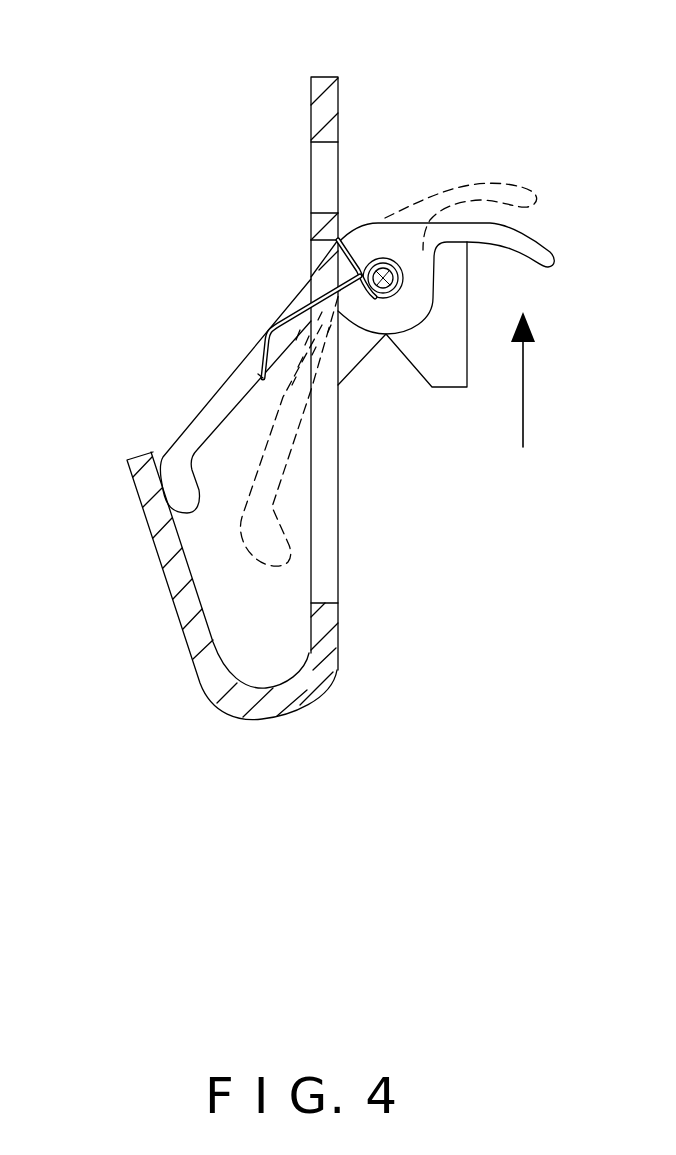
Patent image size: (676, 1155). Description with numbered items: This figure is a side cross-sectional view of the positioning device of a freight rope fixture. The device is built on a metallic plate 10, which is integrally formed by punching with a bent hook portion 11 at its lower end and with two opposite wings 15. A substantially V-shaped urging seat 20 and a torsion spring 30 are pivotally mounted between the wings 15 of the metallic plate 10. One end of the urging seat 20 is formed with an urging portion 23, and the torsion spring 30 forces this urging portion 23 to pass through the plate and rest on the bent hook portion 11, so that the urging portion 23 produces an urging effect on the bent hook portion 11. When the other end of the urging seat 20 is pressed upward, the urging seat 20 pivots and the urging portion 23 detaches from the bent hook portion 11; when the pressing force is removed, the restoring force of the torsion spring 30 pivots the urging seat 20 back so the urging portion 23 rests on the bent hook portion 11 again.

The metallic plate 10 is at (394, 85).
The bent hook portion 11 is at (180, 578).
The wings 15 is at (450, 378).
The urging seat 20 is at (482, 156).
The urging portion 23 is at (193, 432).
The torsion spring 30 is at (360, 273).